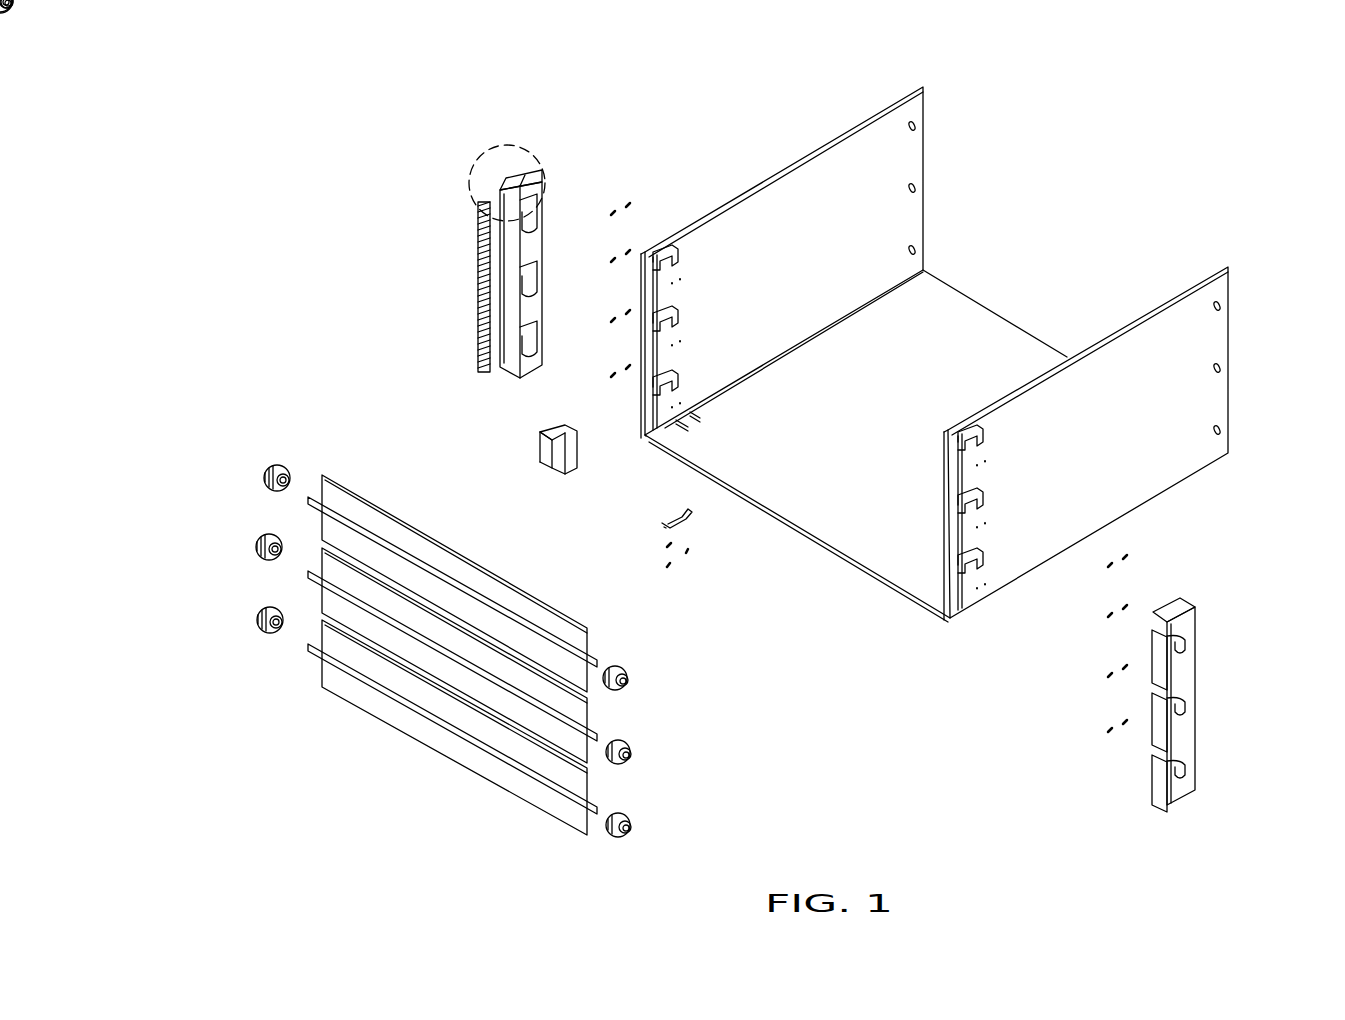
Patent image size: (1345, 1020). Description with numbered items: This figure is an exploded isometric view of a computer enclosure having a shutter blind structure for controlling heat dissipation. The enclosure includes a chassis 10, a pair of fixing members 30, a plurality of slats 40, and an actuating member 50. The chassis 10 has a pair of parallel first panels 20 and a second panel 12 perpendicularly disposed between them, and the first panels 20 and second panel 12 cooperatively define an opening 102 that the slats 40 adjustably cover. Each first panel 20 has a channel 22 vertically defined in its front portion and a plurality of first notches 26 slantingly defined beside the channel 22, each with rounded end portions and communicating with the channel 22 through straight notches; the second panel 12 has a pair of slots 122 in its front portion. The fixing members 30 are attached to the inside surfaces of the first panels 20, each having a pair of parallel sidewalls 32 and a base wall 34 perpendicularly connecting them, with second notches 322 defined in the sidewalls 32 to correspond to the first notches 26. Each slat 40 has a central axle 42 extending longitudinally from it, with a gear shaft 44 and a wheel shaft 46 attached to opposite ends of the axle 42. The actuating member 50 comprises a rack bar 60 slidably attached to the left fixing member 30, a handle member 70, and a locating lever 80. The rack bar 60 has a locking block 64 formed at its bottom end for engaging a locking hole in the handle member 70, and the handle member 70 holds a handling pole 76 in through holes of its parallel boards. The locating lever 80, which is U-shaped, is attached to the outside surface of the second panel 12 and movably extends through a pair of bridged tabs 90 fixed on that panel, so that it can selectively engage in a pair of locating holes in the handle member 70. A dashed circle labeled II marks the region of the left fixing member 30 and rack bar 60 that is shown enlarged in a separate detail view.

The chassis 10 is at (949, 409).
The second panel 12 is at (968, 316).
The first panels 20 is at (910, 217).
The channel 22 is at (653, 289).
The first notches 26 is at (665, 328).
The slots 122 is at (665, 428).
The opening 102 is at (848, 498).
The fixing members 30 is at (893, 468).
The sidewalls 32 is at (527, 247).
The base wall 34 is at (534, 175).
The second notches 322 is at (1182, 705).
The slats 40 is at (385, 708).
The central axle 42 is at (445, 722).
The gear shaft 44 is at (258, 616).
The wheel shaft 46 is at (632, 822).
The actuating member 50 is at (349, 418).
The rack bar 60 is at (453, 319).
The locking block 64 is at (478, 365).
The handle member 70 is at (563, 462).
The handling pole 76 is at (566, 458).
The locating lever 80 is at (664, 530).
The bridged tabs 90 is at (690, 548).
The detail view indicator II is at (468, 192).